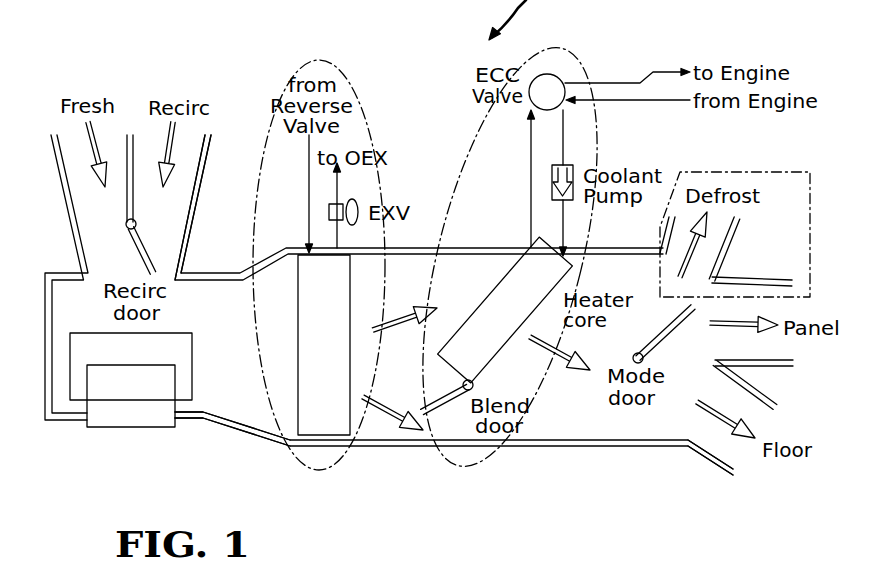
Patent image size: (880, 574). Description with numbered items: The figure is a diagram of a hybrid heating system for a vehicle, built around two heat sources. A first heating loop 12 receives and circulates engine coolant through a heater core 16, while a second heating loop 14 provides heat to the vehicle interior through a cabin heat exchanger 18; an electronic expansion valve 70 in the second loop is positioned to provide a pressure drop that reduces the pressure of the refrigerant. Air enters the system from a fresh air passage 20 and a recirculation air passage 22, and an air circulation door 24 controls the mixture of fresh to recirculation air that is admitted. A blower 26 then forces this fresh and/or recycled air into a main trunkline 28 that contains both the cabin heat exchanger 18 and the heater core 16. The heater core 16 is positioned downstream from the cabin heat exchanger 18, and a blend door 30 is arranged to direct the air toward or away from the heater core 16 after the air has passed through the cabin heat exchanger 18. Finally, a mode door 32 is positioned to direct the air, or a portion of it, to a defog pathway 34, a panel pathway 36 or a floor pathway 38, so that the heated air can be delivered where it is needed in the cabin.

The first heating loop 12 is at (591, 59).
The second heating loop 14 is at (350, 84).
The heater core 16 is at (503, 347).
The cabin heat exchanger 18 is at (298, 421).
The fresh air passage 20 is at (80, 255).
The recirculation air passage 22 is at (188, 220).
The air circulation door 24 is at (150, 262).
The blower 26 is at (107, 419).
The main trunkline 28 is at (247, 425).
The blend door 30 is at (443, 406).
The mode door 32 is at (681, 320).
The defog pathway 34 is at (728, 250).
The panel pathway 36 is at (757, 359).
The floor pathway 38 is at (717, 464).
The electronic expansion valve 70 is at (356, 202).